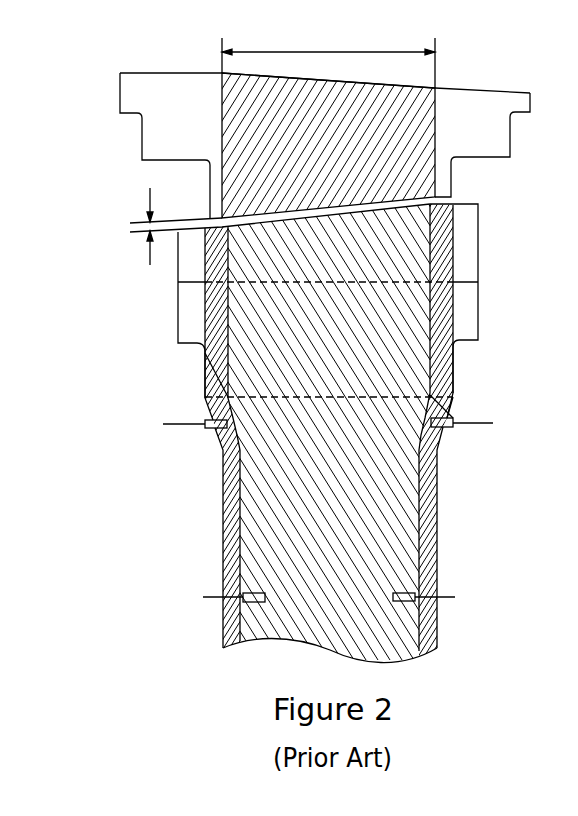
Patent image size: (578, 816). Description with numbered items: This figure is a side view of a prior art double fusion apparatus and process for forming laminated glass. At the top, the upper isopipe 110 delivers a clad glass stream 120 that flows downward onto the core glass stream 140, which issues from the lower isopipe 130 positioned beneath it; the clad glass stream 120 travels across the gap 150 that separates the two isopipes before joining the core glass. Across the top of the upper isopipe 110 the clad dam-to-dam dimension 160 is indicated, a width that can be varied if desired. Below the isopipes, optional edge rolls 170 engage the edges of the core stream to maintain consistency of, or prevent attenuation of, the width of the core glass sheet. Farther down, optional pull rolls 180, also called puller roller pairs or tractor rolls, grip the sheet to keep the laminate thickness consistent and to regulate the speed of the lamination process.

The upper isopipe 110 is at (133, 93).
The clad glass stream 120 is at (408, 84).
The lower isopipe 130 is at (190, 303).
The core glass stream 140 is at (445, 238).
The gap 150 is at (148, 222).
The clad dam-to-dam dimension 160 is at (347, 52).
The edge rolls 170 is at (212, 432).
The pull rolls 180 is at (218, 600).